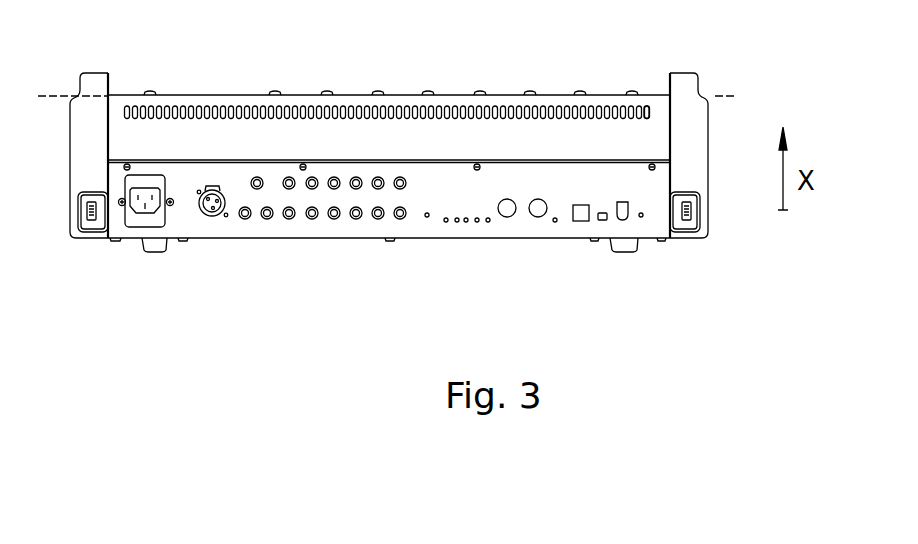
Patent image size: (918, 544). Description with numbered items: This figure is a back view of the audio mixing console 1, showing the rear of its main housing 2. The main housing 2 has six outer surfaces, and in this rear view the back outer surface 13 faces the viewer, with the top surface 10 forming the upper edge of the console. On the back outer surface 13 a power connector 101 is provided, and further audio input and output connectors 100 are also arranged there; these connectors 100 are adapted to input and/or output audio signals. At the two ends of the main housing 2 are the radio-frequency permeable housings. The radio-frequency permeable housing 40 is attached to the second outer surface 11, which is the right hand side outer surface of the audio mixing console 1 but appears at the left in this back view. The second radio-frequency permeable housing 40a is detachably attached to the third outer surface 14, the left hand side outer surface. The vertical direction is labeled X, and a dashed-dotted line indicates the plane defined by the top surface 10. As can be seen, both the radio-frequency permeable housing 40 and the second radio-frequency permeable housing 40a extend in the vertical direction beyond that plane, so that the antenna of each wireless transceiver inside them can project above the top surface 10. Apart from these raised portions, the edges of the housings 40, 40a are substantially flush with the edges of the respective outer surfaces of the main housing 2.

The audio mixing console 1 is at (738, 105).
The main housing 2 is at (590, 128).
The top surface 10 is at (187, 95).
The second outer surface 11 is at (107, 112).
The back outer surface 13 is at (653, 125).
The third outer surface 14 is at (672, 107).
The radio-frequency permeable housing 40 is at (82, 163).
The second radio-frequency permeable housing 40a is at (700, 145).
The audio input and output connectors 100 is at (396, 216).
The power connector 101 is at (145, 206).